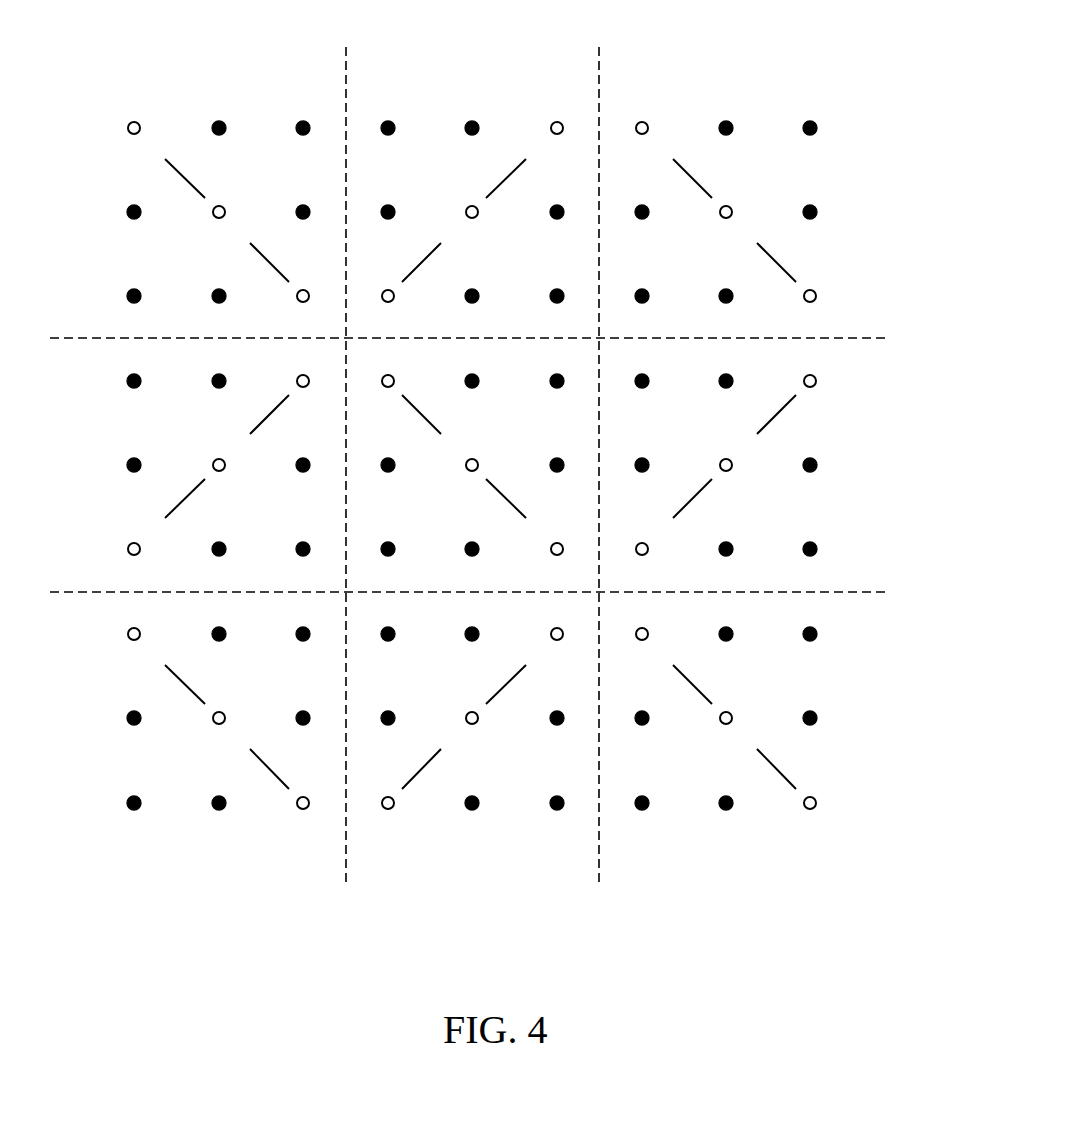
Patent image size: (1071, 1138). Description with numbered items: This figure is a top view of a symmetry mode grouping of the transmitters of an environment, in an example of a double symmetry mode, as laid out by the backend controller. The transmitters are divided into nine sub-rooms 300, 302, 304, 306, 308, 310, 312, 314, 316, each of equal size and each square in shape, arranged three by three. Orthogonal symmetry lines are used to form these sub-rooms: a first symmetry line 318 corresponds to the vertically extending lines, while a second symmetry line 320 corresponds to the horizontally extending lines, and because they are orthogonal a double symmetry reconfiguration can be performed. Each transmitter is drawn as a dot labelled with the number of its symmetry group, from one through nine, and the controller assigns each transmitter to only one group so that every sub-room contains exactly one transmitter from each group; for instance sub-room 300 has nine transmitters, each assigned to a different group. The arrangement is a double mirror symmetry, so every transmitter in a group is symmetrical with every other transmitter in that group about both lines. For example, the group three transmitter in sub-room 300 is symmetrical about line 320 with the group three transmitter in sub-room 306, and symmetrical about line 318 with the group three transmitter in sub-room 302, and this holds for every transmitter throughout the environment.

The sub-room 300 is at (221, 54).
The sub-room 302 is at (498, 54).
The sub-room 304 is at (771, 54).
The sub-room 306 is at (75, 477).
The sub-room 308 is at (516, 440).
The sub-room 310 is at (921, 477).
The sub-room 312 is at (223, 898).
The sub-room 314 is at (498, 898).
The sub-room 316 is at (769, 898).
The first symmetry line 318 is at (346, 47).
The second symmetry line 320 is at (888, 338).